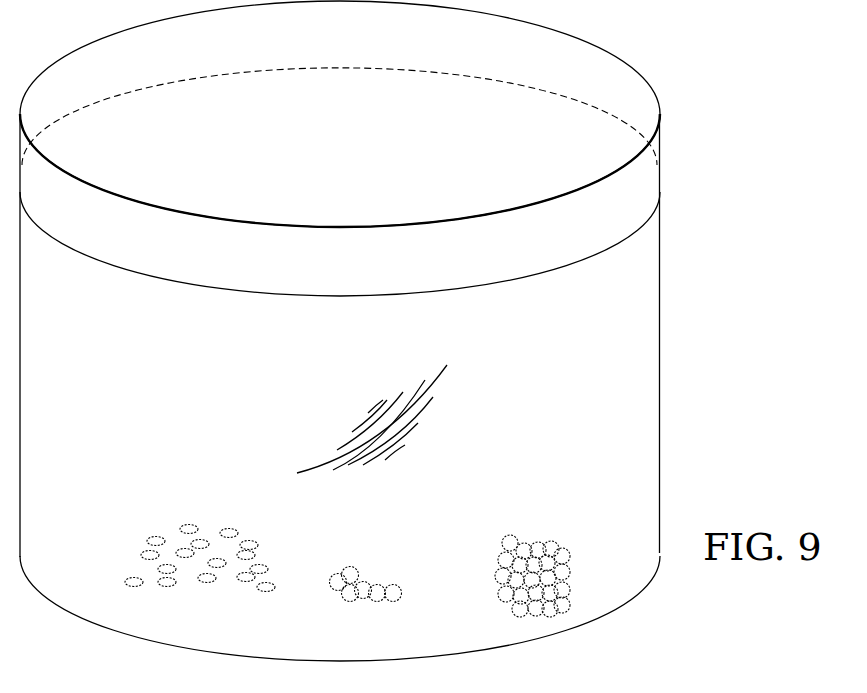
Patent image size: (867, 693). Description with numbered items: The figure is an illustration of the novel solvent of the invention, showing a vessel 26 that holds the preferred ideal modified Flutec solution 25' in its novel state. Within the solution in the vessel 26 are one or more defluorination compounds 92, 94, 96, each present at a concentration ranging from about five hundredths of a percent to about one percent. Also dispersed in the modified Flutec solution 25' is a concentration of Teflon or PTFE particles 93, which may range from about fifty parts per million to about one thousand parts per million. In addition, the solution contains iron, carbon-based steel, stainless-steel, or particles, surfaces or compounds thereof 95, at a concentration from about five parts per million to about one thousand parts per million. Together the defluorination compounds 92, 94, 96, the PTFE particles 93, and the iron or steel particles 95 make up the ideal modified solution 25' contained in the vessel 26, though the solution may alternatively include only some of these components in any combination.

The modified Flutec solution 25' is at (339, 116).
The vessel 26 is at (660, 150).
The defluorination compound 92 is at (588, 347).
The PTFE particles 93 is at (342, 571).
The defluorination compound 94 is at (127, 408).
The iron, carbon-based steel, or stainless-steel particles 95 is at (168, 526).
The defluorination compound 96 is at (92, 312).